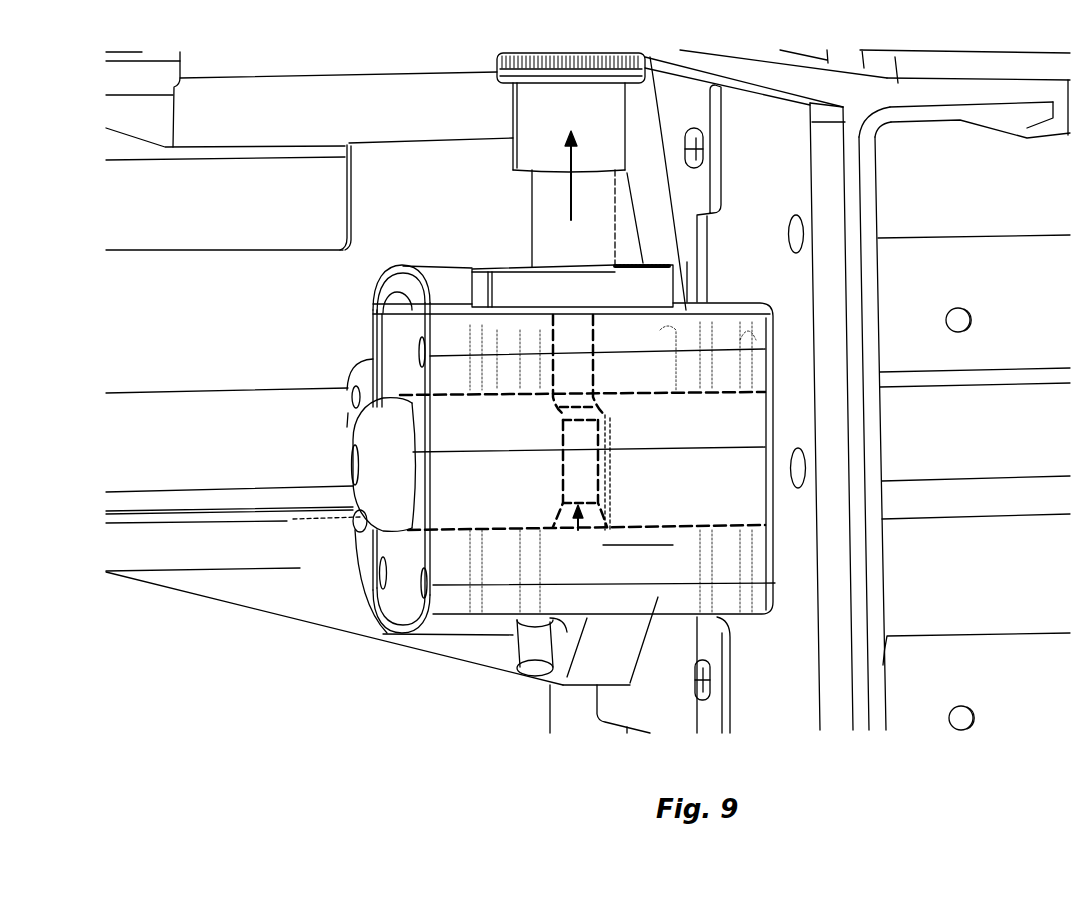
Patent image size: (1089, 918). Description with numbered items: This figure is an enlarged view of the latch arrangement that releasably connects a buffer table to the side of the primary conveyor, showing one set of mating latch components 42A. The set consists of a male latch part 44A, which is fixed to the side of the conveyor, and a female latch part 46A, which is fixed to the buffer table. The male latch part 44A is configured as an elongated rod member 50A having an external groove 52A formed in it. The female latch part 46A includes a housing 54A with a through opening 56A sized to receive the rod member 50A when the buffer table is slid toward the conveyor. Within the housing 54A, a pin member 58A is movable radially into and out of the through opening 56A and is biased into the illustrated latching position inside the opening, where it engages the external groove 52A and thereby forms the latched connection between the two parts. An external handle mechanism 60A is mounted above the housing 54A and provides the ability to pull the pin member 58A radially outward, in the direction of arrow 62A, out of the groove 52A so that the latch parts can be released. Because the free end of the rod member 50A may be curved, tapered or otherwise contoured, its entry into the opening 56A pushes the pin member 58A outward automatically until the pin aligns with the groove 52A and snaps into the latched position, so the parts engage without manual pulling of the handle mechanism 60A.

The mating latch components 42A is at (321, 636).
The male latch part 44A is at (377, 503).
The female latch part 46A is at (400, 598).
The rod member 50A is at (462, 532).
The external groove 52A is at (578, 531).
The housing 54A is at (390, 337).
The through opening 56A is at (500, 392).
The pin member 58A is at (582, 343).
The external handle mechanism 60A is at (520, 157).
The arrow 62A is at (571, 219).